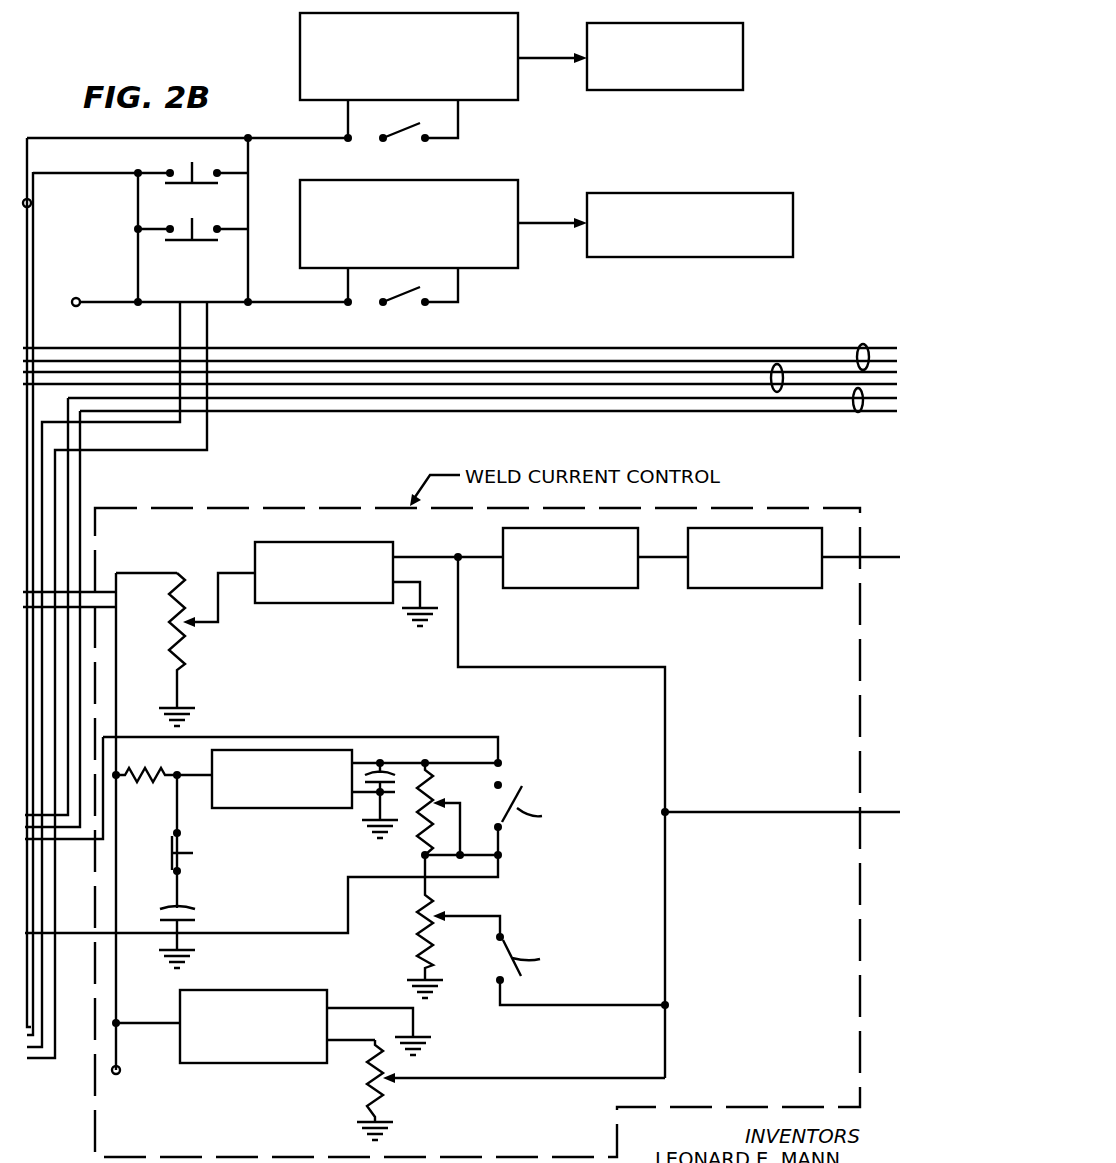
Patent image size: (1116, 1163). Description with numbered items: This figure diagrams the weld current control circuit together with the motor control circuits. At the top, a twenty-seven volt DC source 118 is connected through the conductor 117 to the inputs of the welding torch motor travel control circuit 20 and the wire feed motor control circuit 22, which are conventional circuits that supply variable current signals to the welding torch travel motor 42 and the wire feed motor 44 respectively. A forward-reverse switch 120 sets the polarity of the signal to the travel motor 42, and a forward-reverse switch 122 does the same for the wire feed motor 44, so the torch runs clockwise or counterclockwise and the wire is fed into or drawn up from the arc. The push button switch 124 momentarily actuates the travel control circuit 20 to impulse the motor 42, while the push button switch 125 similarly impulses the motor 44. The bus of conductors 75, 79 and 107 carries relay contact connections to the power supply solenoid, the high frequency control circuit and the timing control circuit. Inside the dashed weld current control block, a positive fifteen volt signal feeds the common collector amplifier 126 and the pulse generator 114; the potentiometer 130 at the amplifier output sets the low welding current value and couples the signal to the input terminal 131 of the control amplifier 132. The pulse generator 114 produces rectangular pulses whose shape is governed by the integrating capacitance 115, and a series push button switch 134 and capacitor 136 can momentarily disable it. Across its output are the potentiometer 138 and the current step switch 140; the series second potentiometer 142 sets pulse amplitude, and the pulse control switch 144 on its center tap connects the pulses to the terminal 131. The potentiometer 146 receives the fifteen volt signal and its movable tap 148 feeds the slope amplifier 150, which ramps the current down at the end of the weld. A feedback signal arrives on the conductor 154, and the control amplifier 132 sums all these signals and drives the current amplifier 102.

The wire feed motor control circuit 22 is at (300, 33).
The wire feed motor 44 is at (743, 52).
The forward-reverse switch 122 is at (396, 142).
The welding torch motor travel control circuit 20 is at (518, 200).
The welding torch travel motor 42 is at (793, 195).
The forward-reverse switch 120 is at (396, 307).
The conductor 117 is at (31, 203).
The 27 volt DC source 118 is at (72, 305).
The push button switch 125 is at (218, 185).
The push button switch 124 is at (192, 229).
The conductors 75 is at (864, 344).
The conductors 79 is at (777, 392).
The conductors 107 is at (858, 412).
The input terminal 131 is at (478, 552).
The control amplifier 132 is at (582, 589).
The current amplifier 102 is at (762, 589).
The slope amplifier 150 is at (326, 605).
The movable tap 148 is at (206, 622).
The potentiometer 146 is at (172, 603).
The pulse generator 114 is at (288, 809).
The integrating capacitance 115 is at (395, 792).
The potentiometer 138 is at (433, 789).
The current step switch 140 is at (514, 792).
The conductor 154 is at (776, 812).
The push button switch 134 is at (193, 853).
The capacitor 136 is at (198, 911).
The second potentiometer 142 is at (420, 947).
The pulse control switch 144 is at (511, 947).
The common collector amplifier 126 is at (287, 990).
The potentiometer 130 is at (373, 1088).